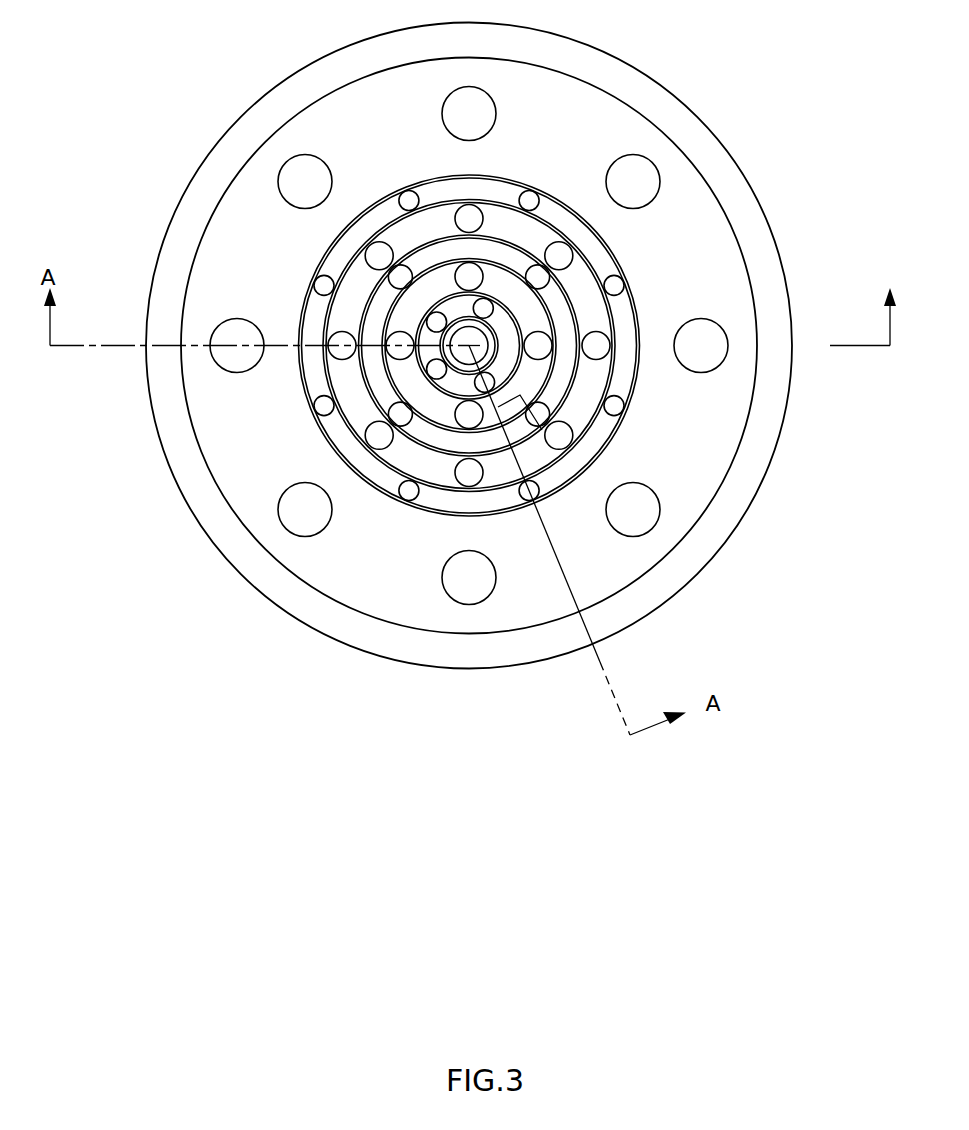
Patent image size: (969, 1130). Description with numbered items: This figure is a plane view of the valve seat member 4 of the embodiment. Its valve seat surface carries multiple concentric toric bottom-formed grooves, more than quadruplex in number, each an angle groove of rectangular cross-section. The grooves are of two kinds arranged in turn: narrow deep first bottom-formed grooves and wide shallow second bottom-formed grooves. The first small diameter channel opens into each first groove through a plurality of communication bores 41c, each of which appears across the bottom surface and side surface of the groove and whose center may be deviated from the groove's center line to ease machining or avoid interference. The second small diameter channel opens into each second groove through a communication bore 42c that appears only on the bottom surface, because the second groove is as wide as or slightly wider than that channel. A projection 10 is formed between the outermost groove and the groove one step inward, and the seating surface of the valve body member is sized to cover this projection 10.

The valve seat member 4 is at (338, 653).
The projection 10 is at (609, 243).
The communication bore 41c is at (407, 195).
The communication bore 42c is at (380, 253).